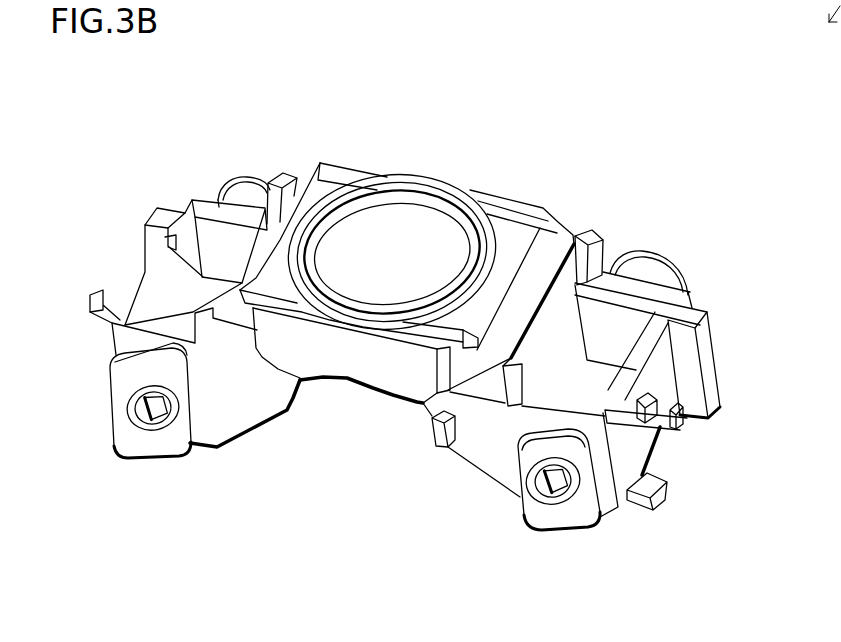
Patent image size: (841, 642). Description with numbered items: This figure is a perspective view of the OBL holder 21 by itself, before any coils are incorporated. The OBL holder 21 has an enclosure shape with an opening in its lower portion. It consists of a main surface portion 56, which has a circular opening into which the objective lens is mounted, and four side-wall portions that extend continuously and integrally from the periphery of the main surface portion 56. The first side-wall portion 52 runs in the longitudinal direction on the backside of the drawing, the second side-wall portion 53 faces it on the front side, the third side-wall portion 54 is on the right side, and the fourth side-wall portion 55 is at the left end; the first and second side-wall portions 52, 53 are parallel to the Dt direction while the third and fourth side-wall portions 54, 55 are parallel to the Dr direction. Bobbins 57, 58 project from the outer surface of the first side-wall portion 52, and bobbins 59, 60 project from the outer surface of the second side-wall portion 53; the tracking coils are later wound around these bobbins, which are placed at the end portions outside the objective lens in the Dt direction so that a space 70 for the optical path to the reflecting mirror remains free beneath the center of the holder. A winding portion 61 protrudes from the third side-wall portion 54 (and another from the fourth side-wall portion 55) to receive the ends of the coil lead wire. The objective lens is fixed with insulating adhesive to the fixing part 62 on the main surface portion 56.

The OBL holder 21 is at (166, 129).
The first side-wall portion 52 is at (563, 225).
The second side-wall portion 53 is at (203, 428).
The third side-wall portion 54 is at (630, 450).
The fourth side-wall portion 55 is at (147, 260).
The main surface portion 56 is at (513, 247).
The bobbin 57 is at (252, 177).
The bobbin 58 is at (687, 272).
The bobbin 59 is at (568, 530).
The bobbin 60 is at (145, 440).
The winding portion 61 is at (667, 495).
The fixing part 62 is at (397, 200).
The space 70 is at (343, 430).